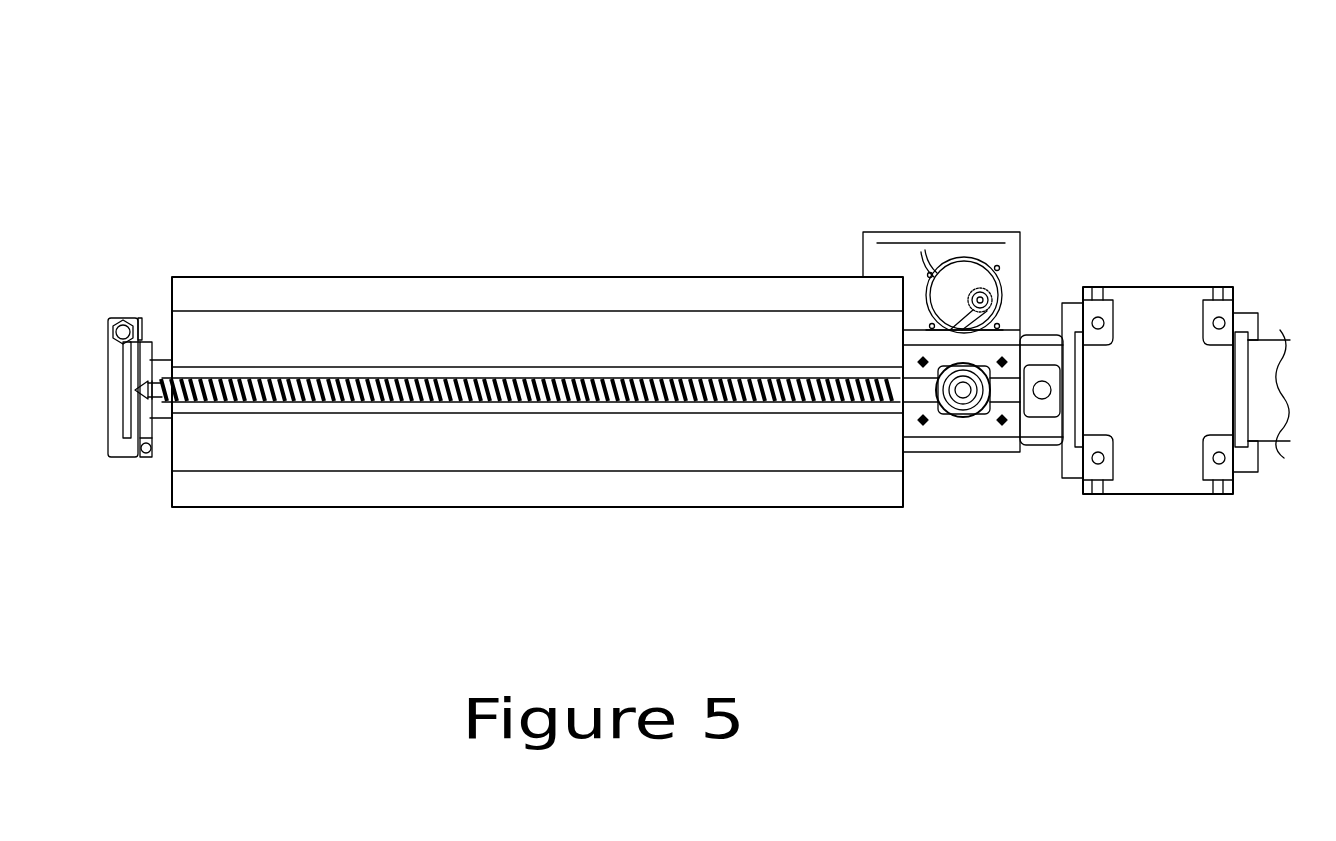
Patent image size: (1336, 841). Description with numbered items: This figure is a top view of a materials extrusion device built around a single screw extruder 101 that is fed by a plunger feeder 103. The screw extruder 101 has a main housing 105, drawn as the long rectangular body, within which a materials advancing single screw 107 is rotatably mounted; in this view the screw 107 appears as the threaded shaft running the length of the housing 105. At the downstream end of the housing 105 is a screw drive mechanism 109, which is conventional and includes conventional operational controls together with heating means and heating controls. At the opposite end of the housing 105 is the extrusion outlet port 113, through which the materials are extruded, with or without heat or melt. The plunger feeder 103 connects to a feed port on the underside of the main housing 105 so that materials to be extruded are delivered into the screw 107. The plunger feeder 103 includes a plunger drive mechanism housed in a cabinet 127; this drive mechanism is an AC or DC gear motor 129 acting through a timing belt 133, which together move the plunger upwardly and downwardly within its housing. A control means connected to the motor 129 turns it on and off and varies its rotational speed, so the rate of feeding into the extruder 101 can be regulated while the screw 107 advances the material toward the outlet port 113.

The single screw extruder 101 is at (538, 218).
The plunger feeder 103 is at (944, 195).
The main housing 105 is at (343, 275).
The materials advancing single screw 107 is at (677, 380).
The screw drive mechanism 109 is at (1162, 295).
The extrusion outlet port 113 is at (106, 366).
The cabinet 127 is at (1021, 255).
The gear motor 129 is at (980, 263).
The timing belt 133 is at (1003, 318).